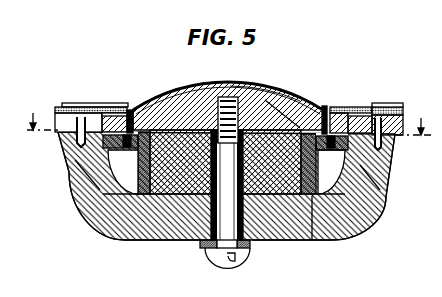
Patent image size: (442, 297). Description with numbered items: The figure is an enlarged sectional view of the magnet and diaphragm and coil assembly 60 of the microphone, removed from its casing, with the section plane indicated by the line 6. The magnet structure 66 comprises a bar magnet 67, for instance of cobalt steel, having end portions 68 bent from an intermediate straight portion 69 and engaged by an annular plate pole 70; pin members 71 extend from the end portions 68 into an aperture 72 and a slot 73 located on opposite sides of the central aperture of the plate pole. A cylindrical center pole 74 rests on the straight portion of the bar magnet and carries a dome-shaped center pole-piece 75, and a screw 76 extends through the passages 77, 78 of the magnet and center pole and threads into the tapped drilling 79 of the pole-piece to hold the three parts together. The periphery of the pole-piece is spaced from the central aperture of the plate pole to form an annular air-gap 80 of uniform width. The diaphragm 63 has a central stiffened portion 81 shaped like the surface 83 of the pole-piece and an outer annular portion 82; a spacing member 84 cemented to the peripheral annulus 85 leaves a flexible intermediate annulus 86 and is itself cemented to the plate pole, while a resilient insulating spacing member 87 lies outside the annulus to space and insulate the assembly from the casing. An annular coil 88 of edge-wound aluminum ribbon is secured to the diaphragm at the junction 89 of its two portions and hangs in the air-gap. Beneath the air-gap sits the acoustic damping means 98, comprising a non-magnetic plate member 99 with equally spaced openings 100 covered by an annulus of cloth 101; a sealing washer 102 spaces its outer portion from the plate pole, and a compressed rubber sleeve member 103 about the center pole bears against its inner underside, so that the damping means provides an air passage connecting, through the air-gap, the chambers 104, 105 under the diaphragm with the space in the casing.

The section line 6- 6 is at (229, 118).
The magnet and diaphragm and coil assembly 60 is at (64, 162).
The diaphragm 63 is at (272, 87).
The magnet structure 66 is at (90, 222).
The bar magnet 67 is at (129, 238).
The end portions 68 is at (87, 177).
The intermediate straight portion 69 is at (276, 228).
The plate pole 70 is at (397, 134).
The pin members 71 is at (63, 137).
The aperture 72 is at (386, 110).
The slot 73 is at (56, 117).
The center pole 74 is at (286, 180).
The center pole-piece 75 is at (283, 115).
The screw 76 is at (219, 253).
The passage 77 is at (193, 241).
The passage 78 is at (173, 238).
The tapped drilling 79 is at (228, 96).
The annular air-gap 80 is at (335, 114).
The central stiffened portion 81 is at (172, 91).
The outer annular portion 82 is at (125, 112).
The surface 83 is at (196, 89).
The spacing member 84 is at (60, 112).
The peripheral annulus 85 is at (73, 107).
The flexible intermediate annulus 86 is at (98, 103).
The spacing member 87 is at (377, 103).
The annular coil 88 is at (134, 110).
The junction 89 is at (325, 106).
The acoustic damping means 98 is at (123, 172).
The plate member 99 is at (368, 183).
The openings 100 is at (129, 148).
The annulus of cloth 101 is at (329, 148).
The sealing washer 102 is at (352, 118).
The sleeve member 103 is at (312, 242).
The chamber 104 is at (113, 112).
The chamber 105 is at (250, 85).